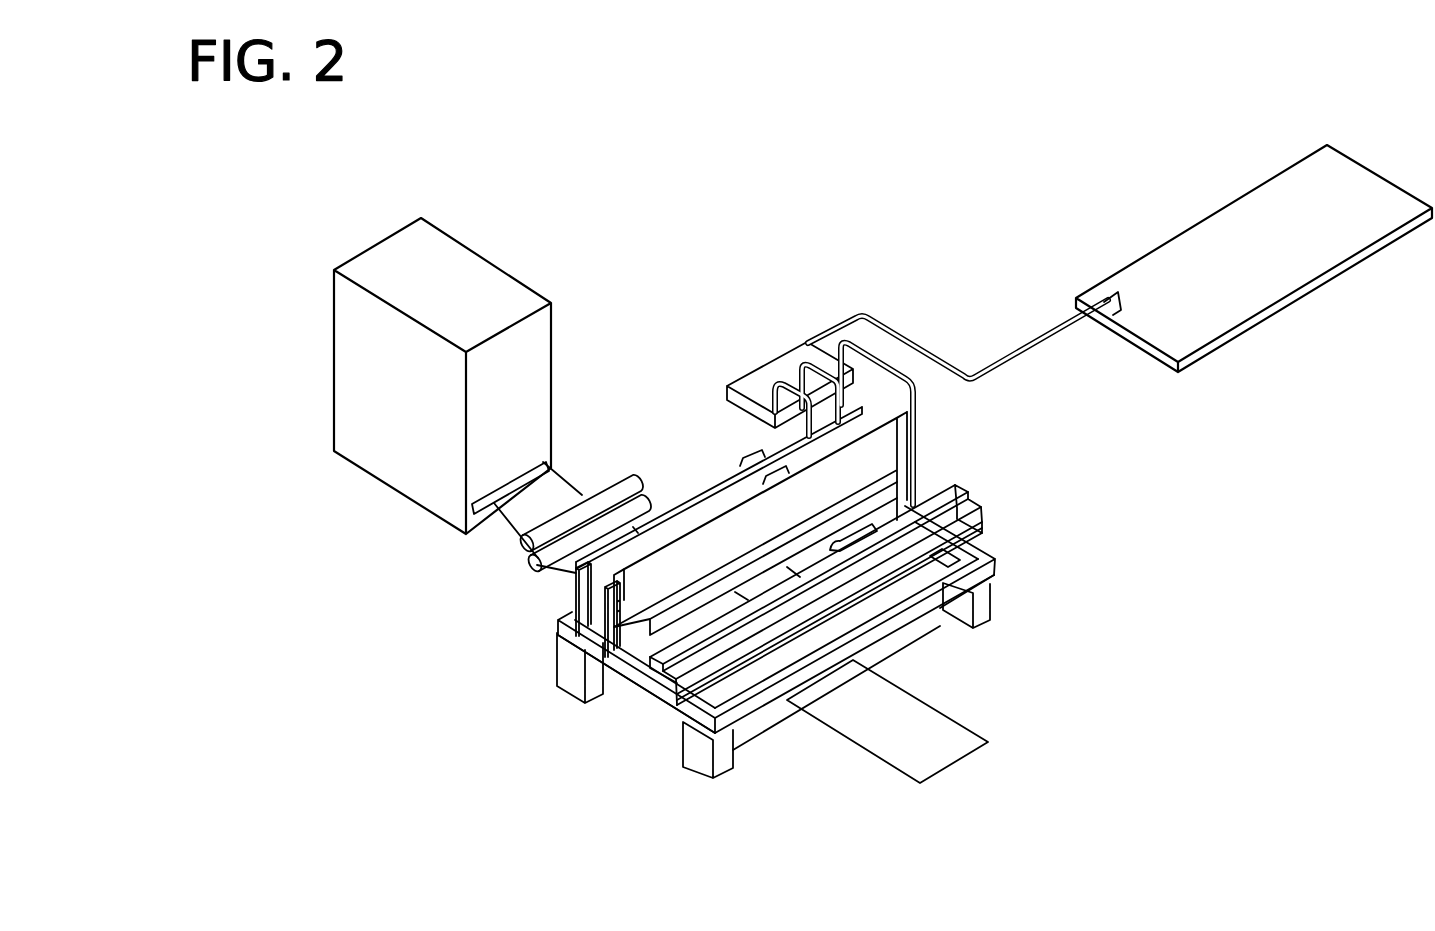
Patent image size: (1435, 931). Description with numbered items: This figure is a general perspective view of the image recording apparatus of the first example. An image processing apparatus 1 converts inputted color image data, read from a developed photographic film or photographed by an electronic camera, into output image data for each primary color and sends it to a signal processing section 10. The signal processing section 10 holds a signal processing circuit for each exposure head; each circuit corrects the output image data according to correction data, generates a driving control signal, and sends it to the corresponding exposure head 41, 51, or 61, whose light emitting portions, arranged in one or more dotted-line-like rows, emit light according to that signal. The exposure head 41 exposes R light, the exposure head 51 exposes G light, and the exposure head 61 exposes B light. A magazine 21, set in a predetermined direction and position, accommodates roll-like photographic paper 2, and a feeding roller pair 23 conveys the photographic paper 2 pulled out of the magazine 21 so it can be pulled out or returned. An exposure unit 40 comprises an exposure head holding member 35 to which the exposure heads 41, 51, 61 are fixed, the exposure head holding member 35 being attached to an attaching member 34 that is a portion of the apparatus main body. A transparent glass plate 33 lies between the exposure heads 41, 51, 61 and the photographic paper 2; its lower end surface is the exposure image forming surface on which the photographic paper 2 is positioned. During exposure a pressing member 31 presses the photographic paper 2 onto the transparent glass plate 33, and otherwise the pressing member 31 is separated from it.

The image processing apparatus 1 is at (1258, 330).
The photographic paper 2 is at (973, 737).
The signal processing section 10 is at (748, 372).
The magazine 21 is at (383, 243).
The feeding roller pair 23 is at (537, 572).
The pressing member 31 is at (770, 735).
The transparent glass plate 33 is at (887, 630).
The attaching member 34 is at (567, 692).
The exposure head holding member 35 is at (632, 692).
The exposure unit 40 is at (802, 683).
The exposure head 41 is at (982, 510).
The exposure head 51 is at (897, 450).
The exposure head 61 is at (867, 400).